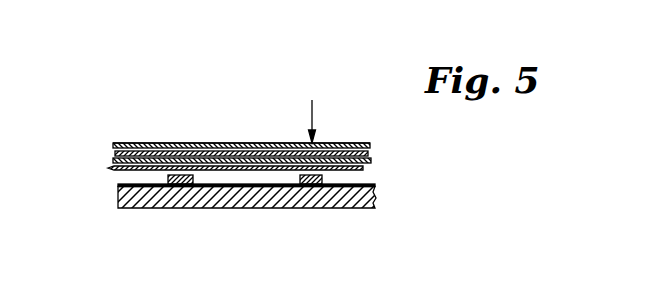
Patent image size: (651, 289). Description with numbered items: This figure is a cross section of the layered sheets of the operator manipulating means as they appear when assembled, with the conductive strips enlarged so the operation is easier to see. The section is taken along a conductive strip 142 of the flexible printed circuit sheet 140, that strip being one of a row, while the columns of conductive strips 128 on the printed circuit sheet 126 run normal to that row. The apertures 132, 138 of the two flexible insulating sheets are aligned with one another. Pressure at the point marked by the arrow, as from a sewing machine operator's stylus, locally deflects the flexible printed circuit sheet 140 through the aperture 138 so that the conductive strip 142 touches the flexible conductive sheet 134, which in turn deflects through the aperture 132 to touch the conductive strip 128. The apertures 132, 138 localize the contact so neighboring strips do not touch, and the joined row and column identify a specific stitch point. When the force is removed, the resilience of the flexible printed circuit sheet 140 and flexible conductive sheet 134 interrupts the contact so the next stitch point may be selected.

The printed circuit sheet 126 is at (258, 195).
The conductive strips 128 is at (178, 184).
The aperture 132 is at (200, 186).
The flexible conductive sheet 134 is at (110, 170).
The aperture 138 is at (162, 143).
The flexible printed circuit sheet 140 is at (204, 143).
The conductive strip 142 is at (131, 143).